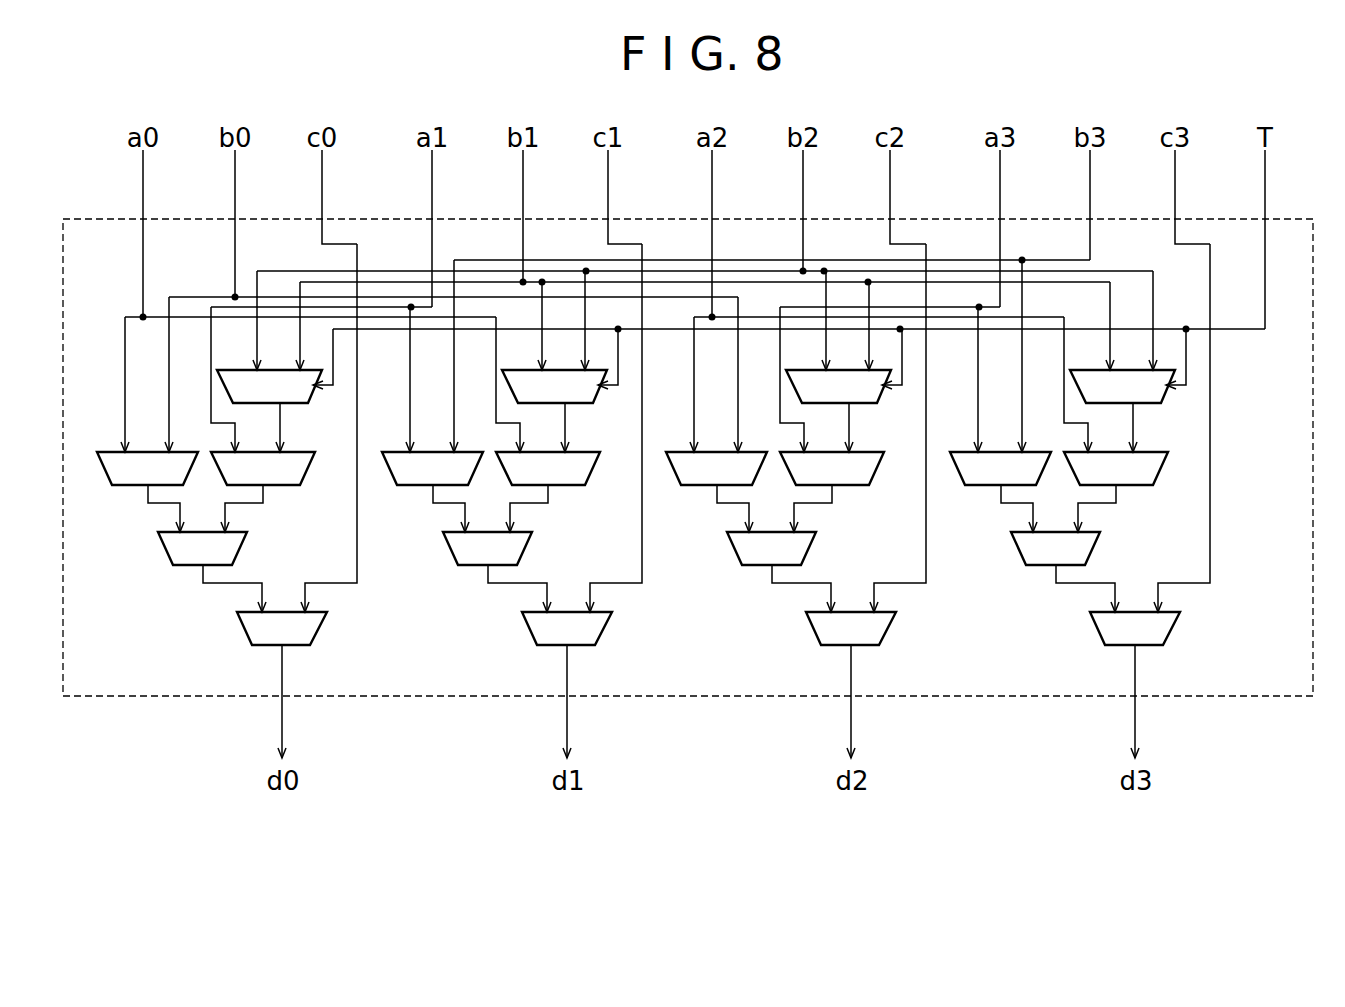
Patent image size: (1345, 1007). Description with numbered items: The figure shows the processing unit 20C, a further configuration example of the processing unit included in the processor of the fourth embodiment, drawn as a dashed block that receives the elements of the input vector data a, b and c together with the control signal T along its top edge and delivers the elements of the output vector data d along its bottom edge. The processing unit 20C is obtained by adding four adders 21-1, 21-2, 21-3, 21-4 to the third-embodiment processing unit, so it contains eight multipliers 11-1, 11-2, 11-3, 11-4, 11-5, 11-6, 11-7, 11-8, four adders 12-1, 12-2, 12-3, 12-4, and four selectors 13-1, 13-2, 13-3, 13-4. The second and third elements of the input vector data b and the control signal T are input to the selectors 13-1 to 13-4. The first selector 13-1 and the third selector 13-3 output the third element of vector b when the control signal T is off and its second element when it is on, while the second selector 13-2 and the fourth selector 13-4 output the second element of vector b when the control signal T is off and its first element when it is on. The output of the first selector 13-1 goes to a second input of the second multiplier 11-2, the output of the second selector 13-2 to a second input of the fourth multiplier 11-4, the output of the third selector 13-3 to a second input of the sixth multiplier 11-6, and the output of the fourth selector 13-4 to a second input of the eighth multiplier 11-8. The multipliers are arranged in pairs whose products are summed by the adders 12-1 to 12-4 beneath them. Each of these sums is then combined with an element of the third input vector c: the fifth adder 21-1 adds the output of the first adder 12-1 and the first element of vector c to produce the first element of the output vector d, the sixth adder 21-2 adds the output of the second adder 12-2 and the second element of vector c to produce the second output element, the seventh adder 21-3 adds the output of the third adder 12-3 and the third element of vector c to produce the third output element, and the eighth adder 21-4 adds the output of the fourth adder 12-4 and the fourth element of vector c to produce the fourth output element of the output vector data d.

The processing unit 20C is at (1294, 218).
The first multiplier 11-1 is at (104, 476).
The second multiplier 11-2 is at (272, 486).
The third multiplier 11-3 is at (389, 476).
The fourth multiplier 11-4 is at (557, 486).
The fifth multiplier 11-5 is at (673, 476).
The sixth multiplier 11-6 is at (841, 486).
The seventh multiplier 11-7 is at (957, 476).
The eighth multiplier 11-8 is at (1125, 486).
The first adder 12-1 is at (167, 554).
The second adder 12-2 is at (452, 554).
The third adder 12-3 is at (736, 554).
The fourth adder 12-4 is at (1020, 554).
The first selector 13-1 is at (297, 404).
The second selector 13-2 is at (582, 404).
The third selector 13-3 is at (866, 404).
The fourth selector 13-4 is at (1150, 404).
The fifth adder 21-1 is at (318, 632).
The sixth adder 21-2 is at (603, 632).
The seventh adder 21-3 is at (887, 632).
The eighth adder 21-4 is at (1171, 632).